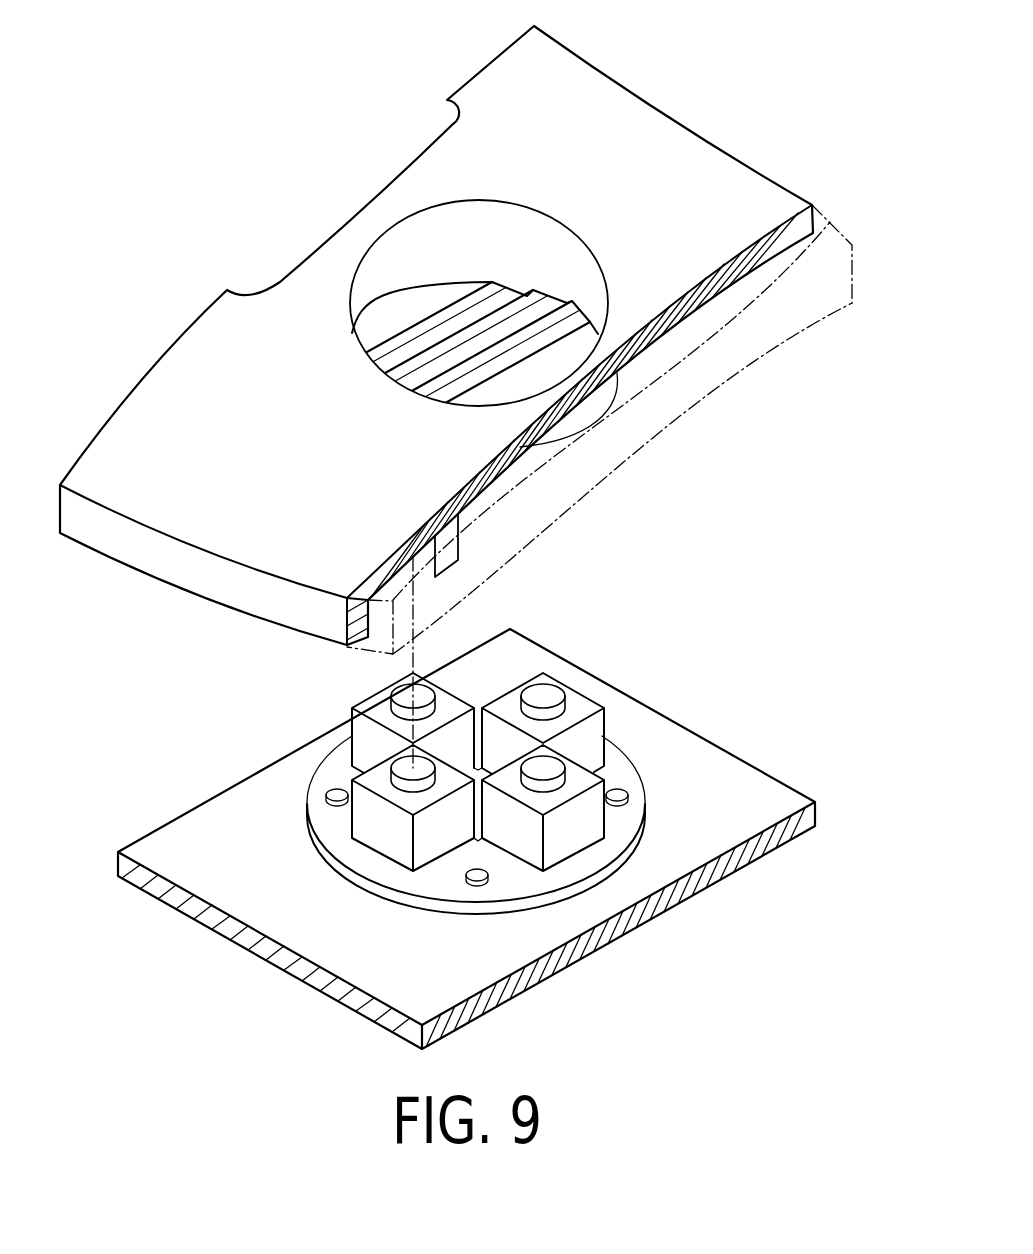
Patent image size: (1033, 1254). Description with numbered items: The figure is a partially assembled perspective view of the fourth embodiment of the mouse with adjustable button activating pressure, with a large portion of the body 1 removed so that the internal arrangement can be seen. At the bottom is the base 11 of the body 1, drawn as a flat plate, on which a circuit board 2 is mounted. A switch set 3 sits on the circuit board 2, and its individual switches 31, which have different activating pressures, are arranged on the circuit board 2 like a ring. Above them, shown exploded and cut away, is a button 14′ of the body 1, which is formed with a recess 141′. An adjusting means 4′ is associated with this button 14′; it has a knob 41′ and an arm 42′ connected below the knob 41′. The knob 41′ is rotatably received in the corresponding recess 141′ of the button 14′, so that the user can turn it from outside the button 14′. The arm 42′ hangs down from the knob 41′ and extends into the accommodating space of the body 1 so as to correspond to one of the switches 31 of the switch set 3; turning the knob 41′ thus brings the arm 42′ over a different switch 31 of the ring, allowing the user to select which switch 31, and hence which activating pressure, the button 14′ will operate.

The button 14′ is at (590, 90).
The recess 141′ is at (523, 263).
The adjusting means 4′ is at (563, 338).
The knob 41′ is at (500, 357).
The arm 42′ is at (458, 560).
The body 1 is at (200, 930).
The base 11 is at (523, 980).
The circuit board 2 is at (633, 762).
The switch set 3 is at (580, 690).
The switch 31 is at (447, 743).